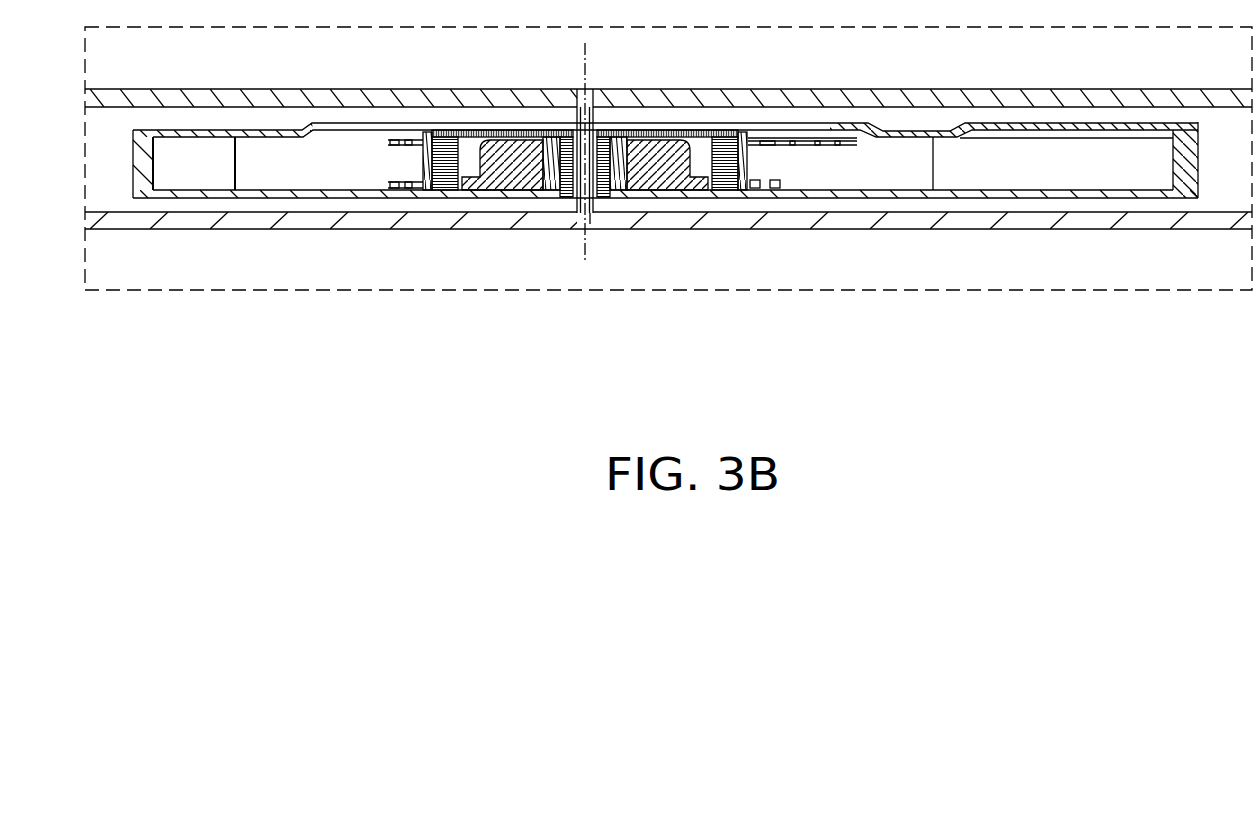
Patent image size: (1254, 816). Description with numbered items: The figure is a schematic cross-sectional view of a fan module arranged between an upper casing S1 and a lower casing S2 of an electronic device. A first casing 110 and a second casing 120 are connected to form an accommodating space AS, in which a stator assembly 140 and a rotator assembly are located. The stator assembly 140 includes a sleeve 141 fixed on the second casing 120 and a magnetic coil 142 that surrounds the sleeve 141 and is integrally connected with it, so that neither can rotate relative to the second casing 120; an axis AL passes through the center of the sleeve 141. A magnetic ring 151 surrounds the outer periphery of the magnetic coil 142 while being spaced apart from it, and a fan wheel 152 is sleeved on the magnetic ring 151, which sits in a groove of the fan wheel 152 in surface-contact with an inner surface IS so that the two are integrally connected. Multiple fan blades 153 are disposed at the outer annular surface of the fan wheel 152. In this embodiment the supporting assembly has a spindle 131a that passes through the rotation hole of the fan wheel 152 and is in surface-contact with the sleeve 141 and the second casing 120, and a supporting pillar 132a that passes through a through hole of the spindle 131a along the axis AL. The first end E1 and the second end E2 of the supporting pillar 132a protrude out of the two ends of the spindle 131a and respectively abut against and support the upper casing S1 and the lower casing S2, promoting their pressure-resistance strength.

The upper casing S1 is at (761, 97).
The lower casing S2 is at (762, 224).
The second casing 120 is at (250, 193).
The first casing 110 is at (296, 130).
The fan blades 153 is at (265, 151).
The accommodating space AS is at (194, 151).
The inner surface IS is at (427, 165).
The fan wheel 152 is at (481, 136).
The magnetic ring 151 is at (442, 145).
The stator assembly 140 is at (568, 263).
The magnetic coil 142 is at (510, 170).
The sleeve 141 is at (552, 186).
The supporting pillar 132a is at (590, 205).
The spindle 131a is at (596, 205).
The axis AL is at (583, 55).
The first end E1 is at (591, 98).
The second end E2 is at (578, 220).